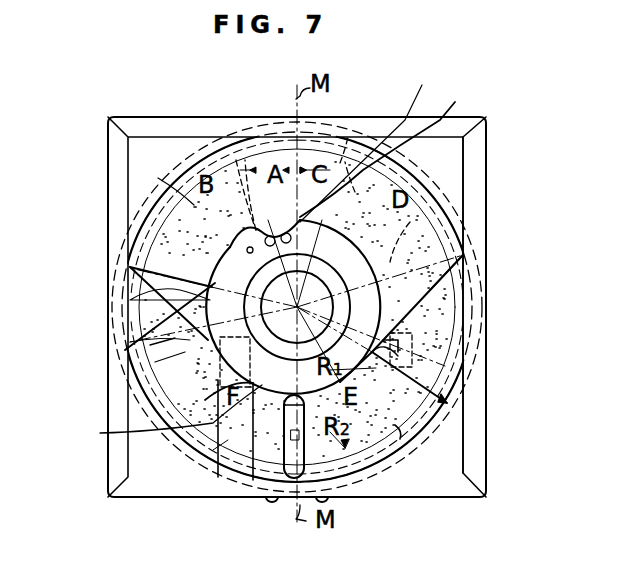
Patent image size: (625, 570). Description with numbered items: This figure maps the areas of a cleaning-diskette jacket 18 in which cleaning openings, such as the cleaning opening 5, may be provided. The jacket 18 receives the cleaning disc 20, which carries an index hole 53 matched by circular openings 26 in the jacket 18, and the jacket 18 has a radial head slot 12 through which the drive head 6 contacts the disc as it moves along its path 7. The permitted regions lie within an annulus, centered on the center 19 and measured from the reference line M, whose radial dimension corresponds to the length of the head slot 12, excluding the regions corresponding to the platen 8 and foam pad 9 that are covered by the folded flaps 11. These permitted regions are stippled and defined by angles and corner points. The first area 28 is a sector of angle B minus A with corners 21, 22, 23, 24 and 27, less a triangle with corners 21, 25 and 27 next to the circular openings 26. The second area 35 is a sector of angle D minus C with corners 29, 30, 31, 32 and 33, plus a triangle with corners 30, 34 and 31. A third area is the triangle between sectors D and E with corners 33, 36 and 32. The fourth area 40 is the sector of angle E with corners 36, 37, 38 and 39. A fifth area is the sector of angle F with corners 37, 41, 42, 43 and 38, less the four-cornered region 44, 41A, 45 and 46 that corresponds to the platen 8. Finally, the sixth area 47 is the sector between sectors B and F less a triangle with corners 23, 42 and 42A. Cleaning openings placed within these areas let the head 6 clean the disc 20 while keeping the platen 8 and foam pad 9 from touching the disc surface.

The cleaning opening 5 is at (157, 212).
The head 6 is at (222, 483).
The path 7 is at (292, 490).
The platen 8 is at (213, 447).
The foam pad 9 is at (412, 337).
The folded flaps 11 is at (170, 122).
The radial head slot 12 is at (352, 456).
The jacket 18 is at (483, 156).
The center 19 is at (305, 318).
The cleaning disc 20 is at (430, 427).
The corner 21 is at (250, 232).
The corner 22 is at (128, 243).
The corner 23 is at (128, 265).
The corner 24 is at (128, 294).
The corner 25 is at (256, 230).
The circular openings 26 is at (318, 205).
The corner 27 is at (250, 238).
The first area 28 is at (163, 180).
The corner 29 is at (463, 253).
The corner 30 is at (325, 168).
The corner 31 is at (389, 147).
The corner 32 is at (460, 268).
The corner 33 is at (463, 262).
The corner 34 is at (371, 141).
The second area 35 is at (410, 222).
The corner 36 is at (400, 360).
The corner 37 is at (225, 432).
The corner 38 is at (312, 442).
The corner 39 is at (440, 385).
The fourth area 40 is at (400, 430).
The corner 41 is at (206, 362).
The corner 41A is at (193, 425).
The corner 42 is at (130, 355).
The corner 42A is at (128, 327).
The corner 43 is at (135, 362).
The corner 44 is at (100, 433).
The corner 45 is at (213, 468).
The corner 46 is at (258, 477).
The sixth area 47 is at (130, 318).
The index hole 53 is at (250, 250).